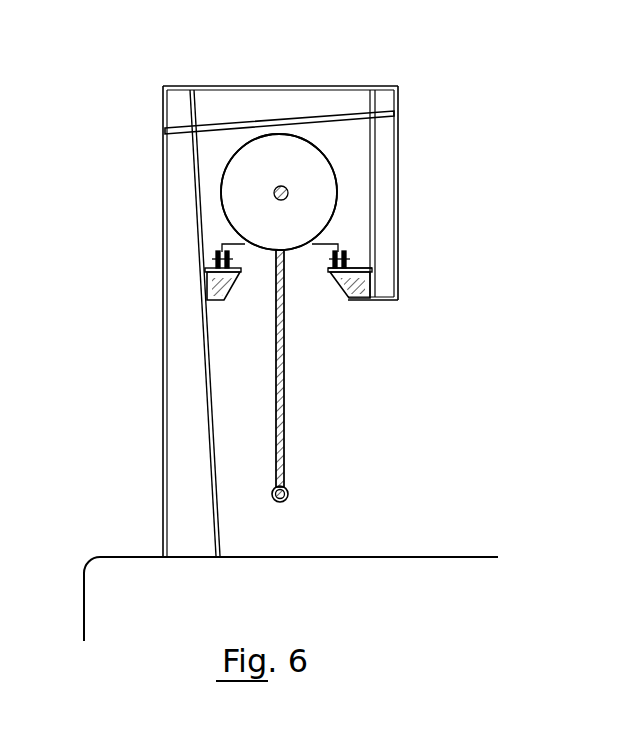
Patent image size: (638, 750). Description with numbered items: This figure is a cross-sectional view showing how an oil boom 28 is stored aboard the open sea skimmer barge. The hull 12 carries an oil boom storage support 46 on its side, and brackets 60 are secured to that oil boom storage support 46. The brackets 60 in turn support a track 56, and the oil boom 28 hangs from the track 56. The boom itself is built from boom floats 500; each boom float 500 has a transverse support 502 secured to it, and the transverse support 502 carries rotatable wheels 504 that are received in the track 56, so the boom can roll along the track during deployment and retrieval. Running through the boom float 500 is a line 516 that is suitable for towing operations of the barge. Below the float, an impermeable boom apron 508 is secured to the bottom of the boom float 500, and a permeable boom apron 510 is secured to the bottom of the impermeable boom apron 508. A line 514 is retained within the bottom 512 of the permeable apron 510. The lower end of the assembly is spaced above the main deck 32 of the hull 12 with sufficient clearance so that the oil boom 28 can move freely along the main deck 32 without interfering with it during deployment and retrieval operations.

The hull 12 is at (84, 593).
The oil boom 28 is at (316, 158).
The main deck 32 is at (406, 556).
The oil boom storage support 46 is at (182, 373).
The track 56 is at (218, 258).
The bracket 60 is at (212, 283).
The boom float 500 is at (274, 153).
The transverse support 502 is at (340, 244).
The rotatable wheel 504 is at (356, 258).
The impermeable boom apron 508 is at (283, 343).
The permeable boom apron 510 is at (284, 420).
The bottom of the permeable apron 512 is at (287, 489).
The line 514 is at (288, 497).
The line 516 is at (288, 191).